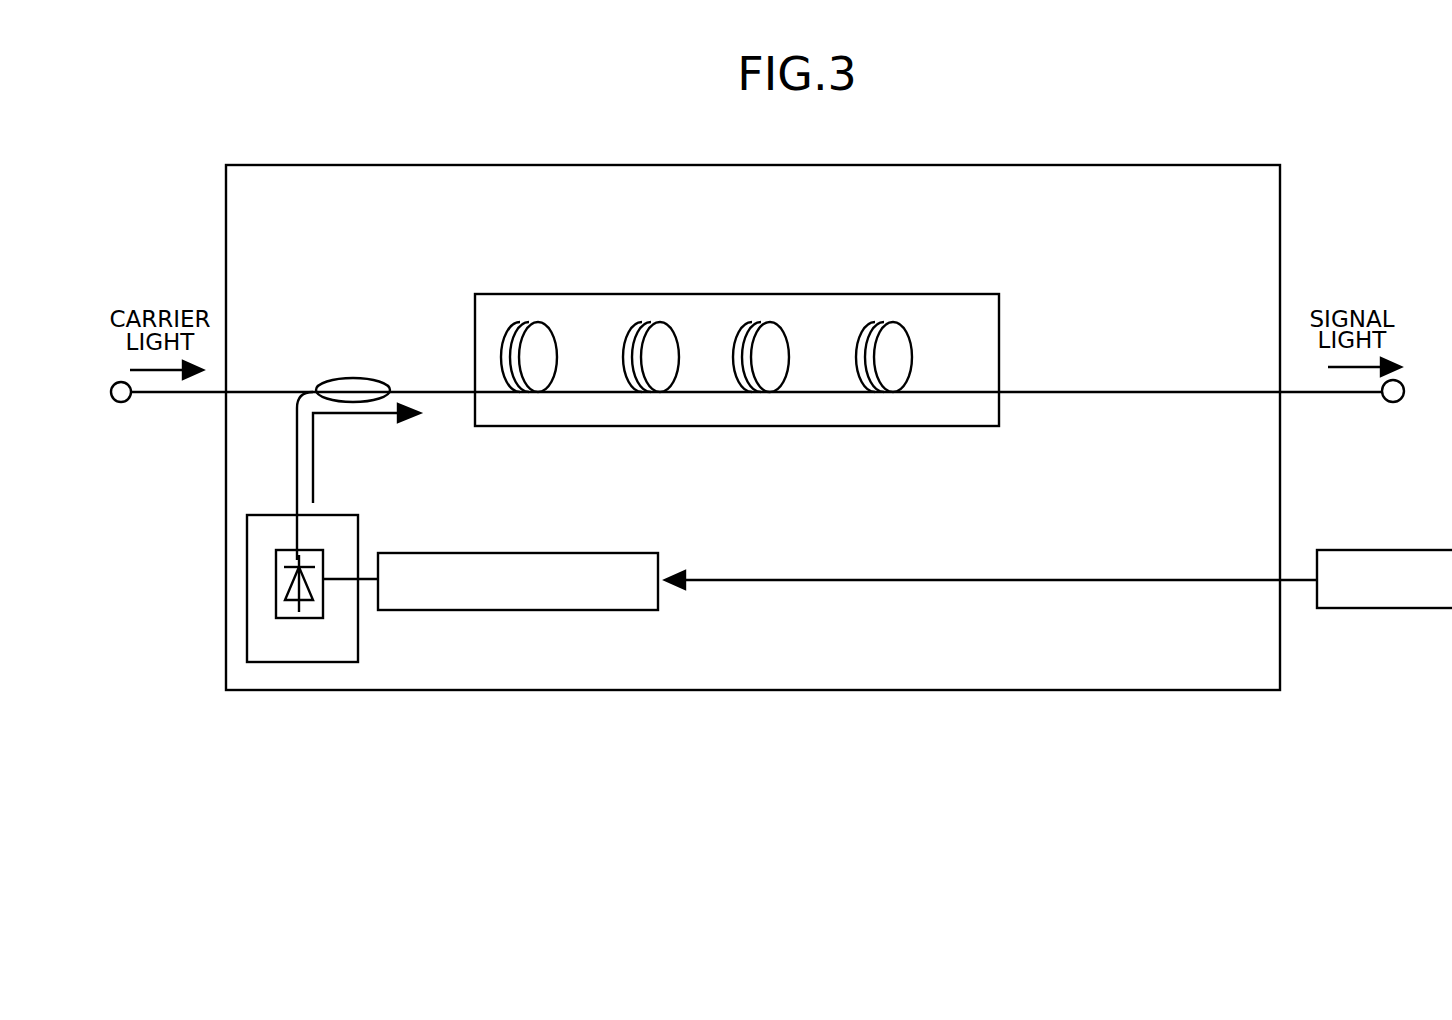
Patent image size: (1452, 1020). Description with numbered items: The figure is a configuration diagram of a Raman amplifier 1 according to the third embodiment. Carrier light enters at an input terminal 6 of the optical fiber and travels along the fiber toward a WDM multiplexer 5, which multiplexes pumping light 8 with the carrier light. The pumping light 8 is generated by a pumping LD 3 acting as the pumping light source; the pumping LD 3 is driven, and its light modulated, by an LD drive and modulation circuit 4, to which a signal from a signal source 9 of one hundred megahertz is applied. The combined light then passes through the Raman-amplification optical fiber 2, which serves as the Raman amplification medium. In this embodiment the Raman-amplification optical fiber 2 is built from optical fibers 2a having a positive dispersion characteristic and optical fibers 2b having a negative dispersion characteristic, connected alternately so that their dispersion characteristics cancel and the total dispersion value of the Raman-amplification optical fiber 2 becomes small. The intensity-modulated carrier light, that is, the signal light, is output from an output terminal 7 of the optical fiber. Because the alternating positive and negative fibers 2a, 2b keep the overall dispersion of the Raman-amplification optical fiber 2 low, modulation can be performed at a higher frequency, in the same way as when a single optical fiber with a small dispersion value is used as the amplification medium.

The Raman amplifier 1 is at (568, 690).
The Raman-amplification optical fiber 2 is at (1000, 308).
The optical fiber having a positive dispersion characteristic 2a is at (530, 320).
The optical fiber having a negative dispersion characteristic 2b is at (655, 394).
The pumping LD 3 is at (305, 662).
The LD drive and modulation circuit 4 is at (410, 553).
The WDM multiplexer 5 is at (357, 378).
The input terminal 6 is at (180, 394).
The output terminal 7 is at (1330, 394).
The pumping light 8 is at (350, 414).
The signal source 9 is at (1420, 550).